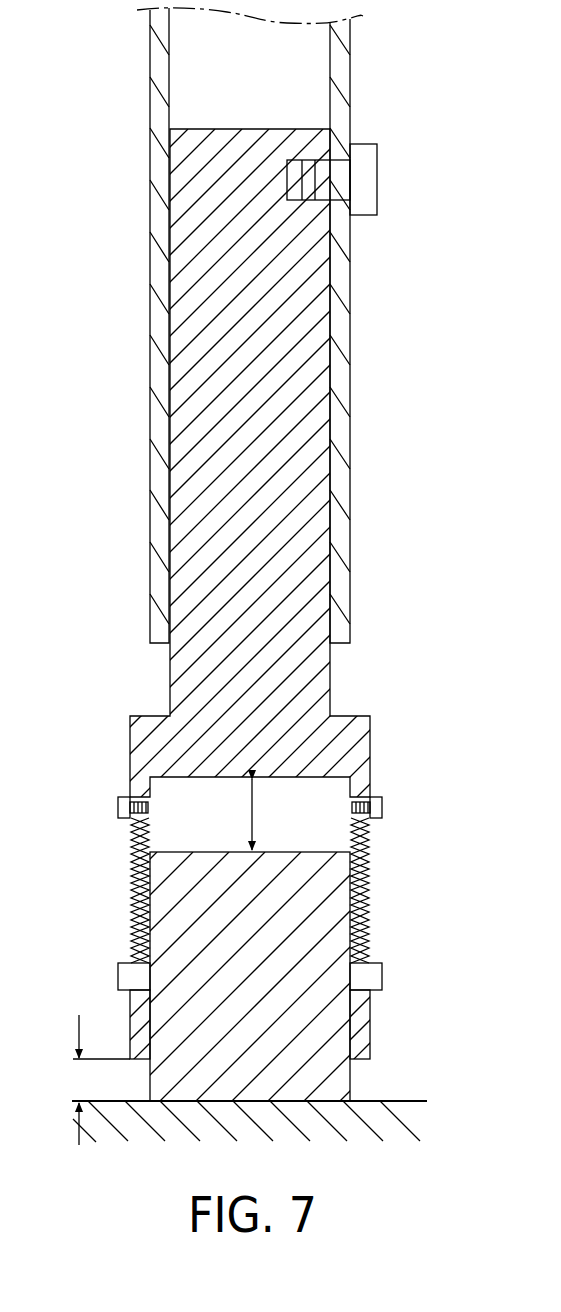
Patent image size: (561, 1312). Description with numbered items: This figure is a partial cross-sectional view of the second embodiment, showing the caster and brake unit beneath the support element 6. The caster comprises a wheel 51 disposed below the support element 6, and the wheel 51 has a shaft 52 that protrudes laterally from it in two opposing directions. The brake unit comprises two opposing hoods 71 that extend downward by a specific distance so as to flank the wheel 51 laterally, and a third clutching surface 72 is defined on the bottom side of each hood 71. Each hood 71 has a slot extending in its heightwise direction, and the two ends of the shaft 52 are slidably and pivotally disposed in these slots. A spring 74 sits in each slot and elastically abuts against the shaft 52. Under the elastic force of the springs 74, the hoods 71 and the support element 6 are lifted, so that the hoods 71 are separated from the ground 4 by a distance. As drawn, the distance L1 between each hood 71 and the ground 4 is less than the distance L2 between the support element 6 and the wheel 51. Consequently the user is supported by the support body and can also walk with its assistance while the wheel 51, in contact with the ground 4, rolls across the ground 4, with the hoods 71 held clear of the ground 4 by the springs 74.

The support element 6 is at (347, 340).
The hood 71 is at (131, 737).
The spring 74 is at (133, 904).
The wheel 51 is at (327, 950).
The shaft 52 is at (378, 985).
The third clutching surface 72 is at (362, 1059).
The ground 4 is at (397, 1102).
The distance L1 is at (96, 1080).
The distance L2 is at (268, 814).